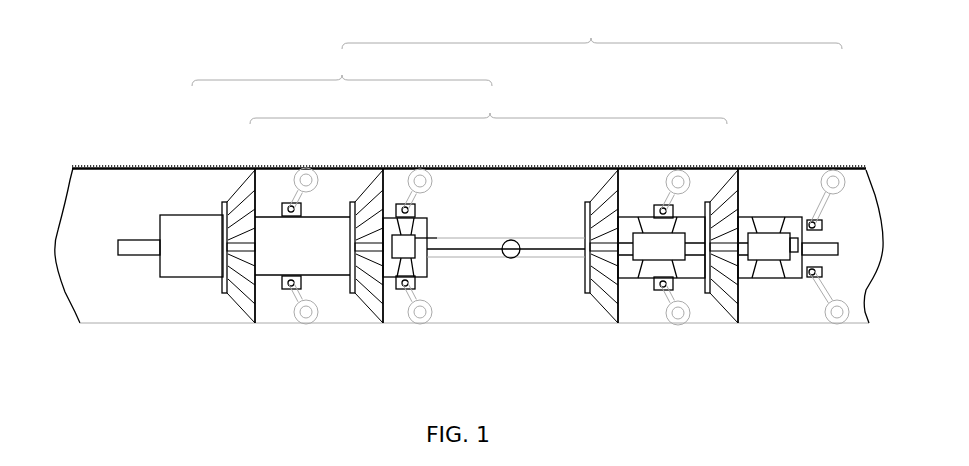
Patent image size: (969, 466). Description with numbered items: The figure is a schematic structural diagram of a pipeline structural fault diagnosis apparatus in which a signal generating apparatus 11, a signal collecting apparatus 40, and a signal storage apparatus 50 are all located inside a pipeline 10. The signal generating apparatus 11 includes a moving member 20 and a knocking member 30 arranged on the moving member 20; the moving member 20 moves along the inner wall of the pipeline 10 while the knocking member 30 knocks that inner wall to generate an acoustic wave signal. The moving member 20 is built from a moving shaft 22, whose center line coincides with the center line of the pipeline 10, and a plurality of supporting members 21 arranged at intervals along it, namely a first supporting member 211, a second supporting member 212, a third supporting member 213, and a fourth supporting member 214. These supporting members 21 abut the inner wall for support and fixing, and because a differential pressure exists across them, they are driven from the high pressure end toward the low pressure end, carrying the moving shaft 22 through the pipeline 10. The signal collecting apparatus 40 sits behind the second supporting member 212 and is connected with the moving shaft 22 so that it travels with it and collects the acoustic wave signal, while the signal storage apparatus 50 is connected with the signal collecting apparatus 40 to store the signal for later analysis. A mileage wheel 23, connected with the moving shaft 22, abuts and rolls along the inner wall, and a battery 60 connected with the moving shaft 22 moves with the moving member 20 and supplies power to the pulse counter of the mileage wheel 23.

The pipeline 10 is at (115, 197).
The signal generating apparatus 11 is at (592, 29).
The moving member 20 is at (342, 67).
The supporting members 21 is at (488, 104).
The moving shaft 22 is at (181, 245).
The mileage wheel 23 is at (305, 323).
The knocking member 30 is at (833, 170).
The signal collecting apparatus 40 is at (402, 253).
The signal storage apparatus 50 is at (649, 245).
The battery 60 is at (770, 247).
The first supporting member 211 is at (235, 203).
The second supporting member 212 is at (365, 201).
The third supporting member 213 is at (594, 212).
The fourth supporting member 214 is at (722, 201).